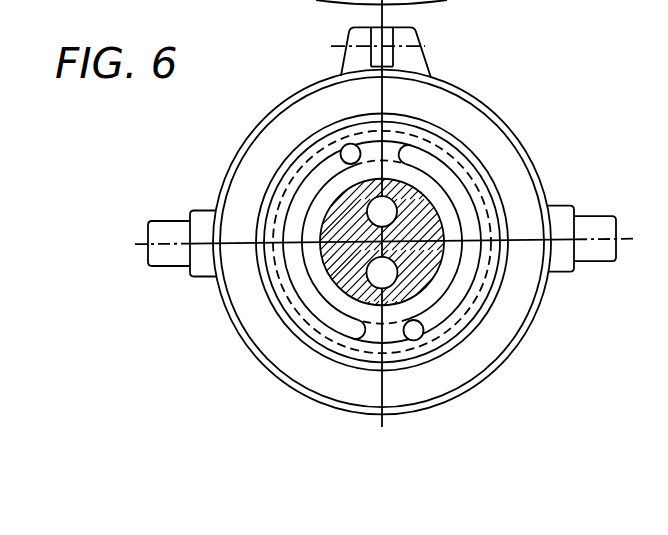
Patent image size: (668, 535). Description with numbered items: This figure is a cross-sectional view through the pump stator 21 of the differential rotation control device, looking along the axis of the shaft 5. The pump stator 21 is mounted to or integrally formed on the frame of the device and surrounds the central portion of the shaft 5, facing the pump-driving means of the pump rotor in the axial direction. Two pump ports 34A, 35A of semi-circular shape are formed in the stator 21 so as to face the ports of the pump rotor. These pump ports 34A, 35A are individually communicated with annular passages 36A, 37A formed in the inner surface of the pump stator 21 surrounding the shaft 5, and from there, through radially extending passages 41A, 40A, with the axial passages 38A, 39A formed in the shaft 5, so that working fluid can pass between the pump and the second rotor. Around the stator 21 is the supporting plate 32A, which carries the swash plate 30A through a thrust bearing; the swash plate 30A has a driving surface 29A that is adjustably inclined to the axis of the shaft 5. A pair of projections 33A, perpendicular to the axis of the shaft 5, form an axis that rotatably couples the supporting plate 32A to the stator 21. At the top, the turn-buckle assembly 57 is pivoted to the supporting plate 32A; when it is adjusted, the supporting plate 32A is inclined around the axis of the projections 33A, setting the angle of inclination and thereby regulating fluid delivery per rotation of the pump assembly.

The shaft 5 is at (438, 279).
The pump stator 21 is at (488, 297).
The driving surface 29A is at (505, 151).
The swash plate 30A is at (524, 177).
The supporting plate 32A is at (486, 107).
The projections 33A is at (626, 207).
The pump port 34A is at (304, 297).
The pump port 35A is at (473, 224).
The annular passage 36A is at (366, 352).
The annular passage 37A is at (366, 352).
The axial passage 38A is at (401, 220).
The axial passage 39A is at (403, 266).
The radially extending passage 40A is at (372, 242).
The radially extending passage 41A is at (382, 241).
The turn-buckle assembly 57 is at (466, 53).